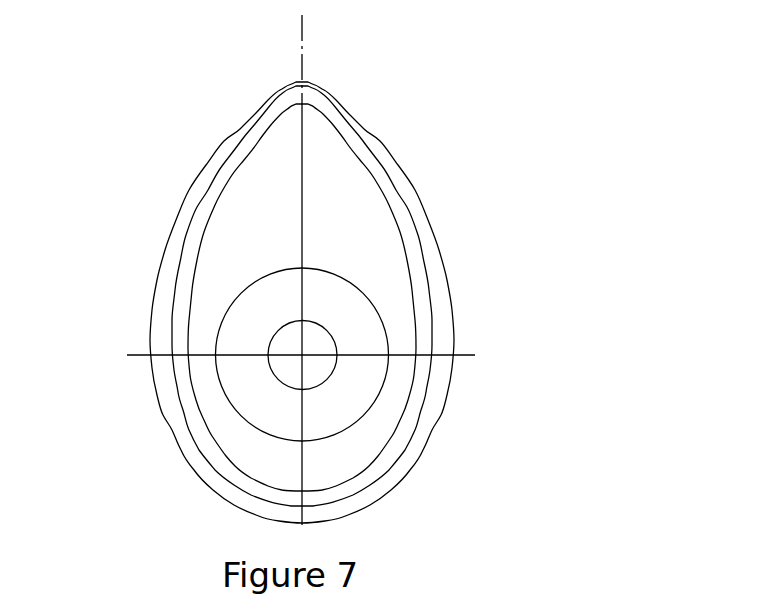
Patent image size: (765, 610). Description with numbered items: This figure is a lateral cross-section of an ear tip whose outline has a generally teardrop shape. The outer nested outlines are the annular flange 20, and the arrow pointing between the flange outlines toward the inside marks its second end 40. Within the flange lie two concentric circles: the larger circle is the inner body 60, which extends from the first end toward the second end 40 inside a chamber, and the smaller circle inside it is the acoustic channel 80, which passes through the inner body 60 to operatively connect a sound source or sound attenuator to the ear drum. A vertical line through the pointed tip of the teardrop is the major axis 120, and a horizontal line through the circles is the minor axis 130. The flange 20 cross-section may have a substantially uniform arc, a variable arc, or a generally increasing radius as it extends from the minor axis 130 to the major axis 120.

The annular flange 20 is at (395, 182).
The second end 40 is at (180, 307).
The inner body 60 is at (331, 405).
The acoustic channel 80 is at (317, 373).
The major axis 120 is at (302, 57).
The minor axis 130 is at (462, 356).